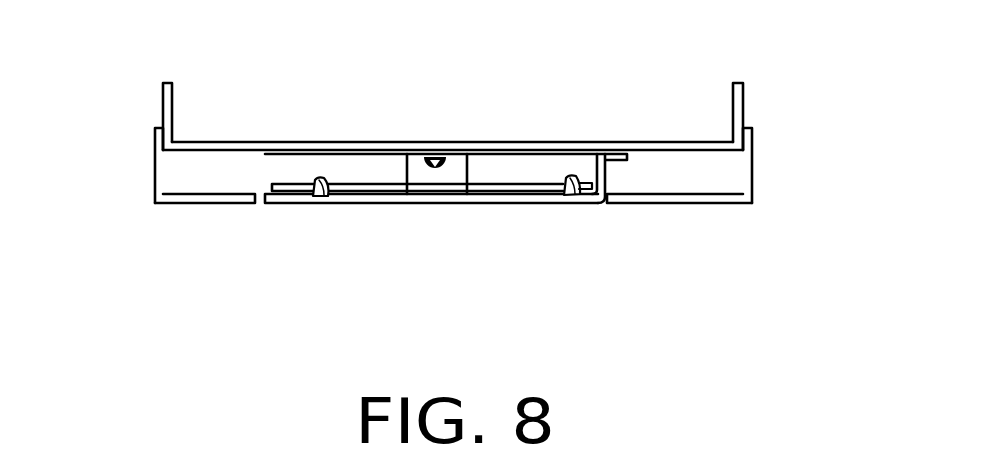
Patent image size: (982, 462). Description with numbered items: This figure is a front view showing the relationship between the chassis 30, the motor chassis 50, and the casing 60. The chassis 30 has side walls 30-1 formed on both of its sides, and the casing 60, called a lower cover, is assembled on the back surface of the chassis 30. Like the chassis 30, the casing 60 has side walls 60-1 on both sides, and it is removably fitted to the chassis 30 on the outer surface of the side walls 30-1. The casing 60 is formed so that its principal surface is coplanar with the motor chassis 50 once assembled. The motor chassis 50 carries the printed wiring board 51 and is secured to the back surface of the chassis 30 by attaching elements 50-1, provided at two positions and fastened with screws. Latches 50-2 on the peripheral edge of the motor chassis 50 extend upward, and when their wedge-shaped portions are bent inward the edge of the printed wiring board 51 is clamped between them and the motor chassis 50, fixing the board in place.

The chassis 30 is at (576, 143).
The side walls 30-1 is at (163, 106).
The casing 60 is at (193, 204).
The side walls 60-1 is at (156, 183).
The motor chassis 50 is at (450, 203).
The attaching elements 50-1 is at (423, 185).
The latches 50-2 is at (322, 203).
The printed wiring board 51 is at (297, 195).